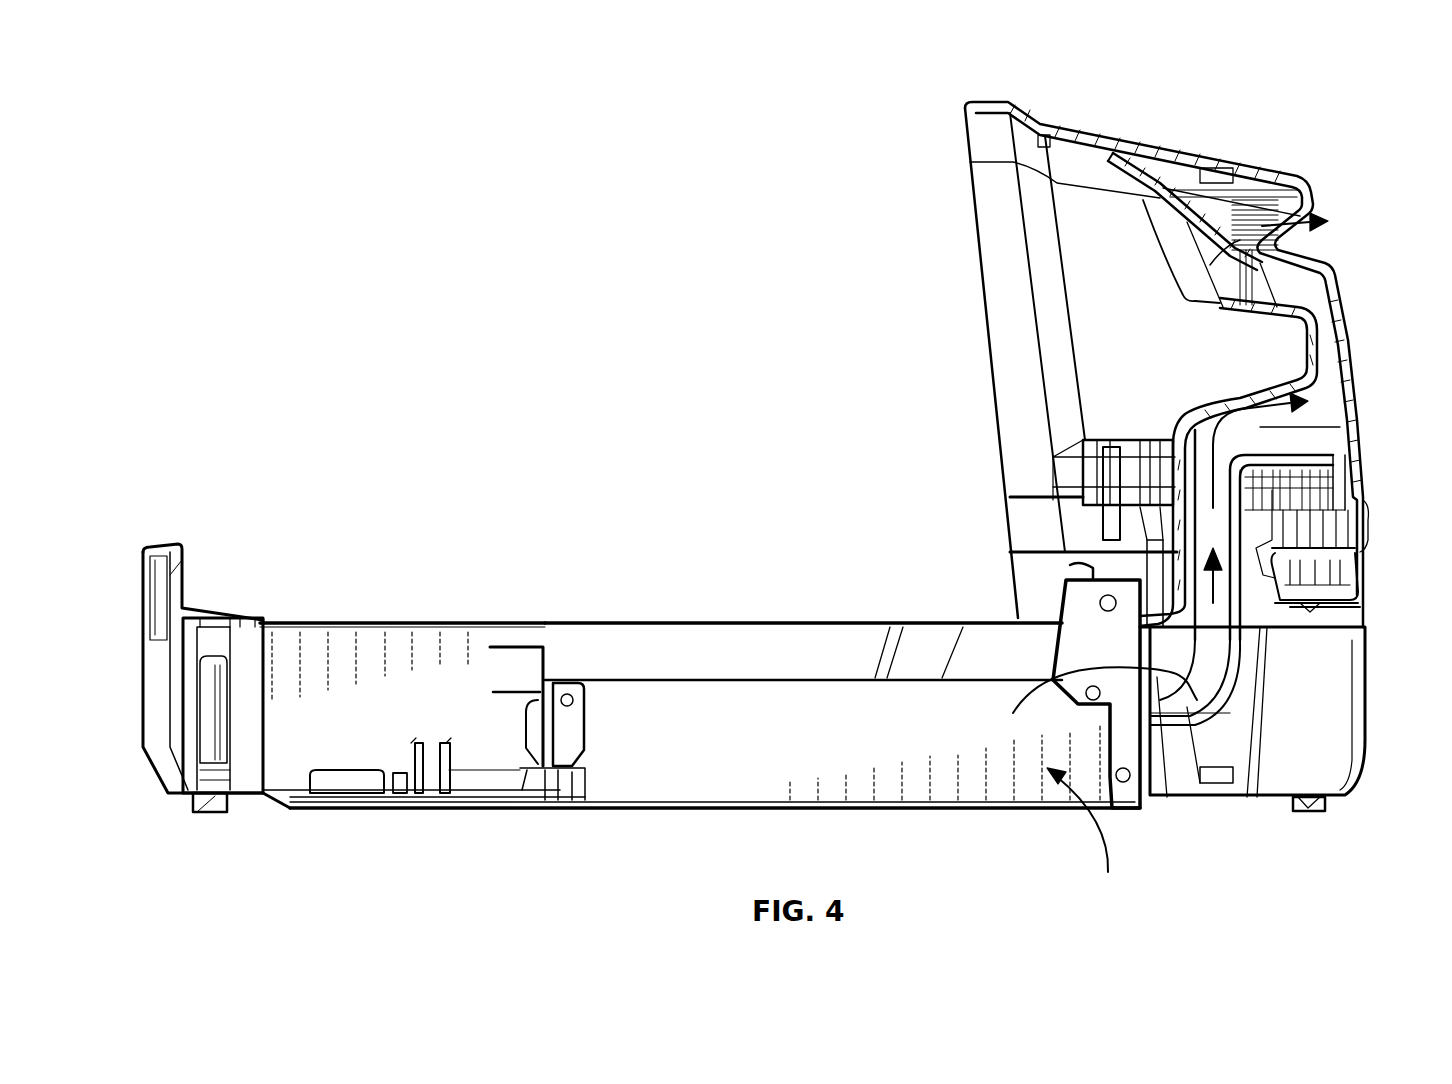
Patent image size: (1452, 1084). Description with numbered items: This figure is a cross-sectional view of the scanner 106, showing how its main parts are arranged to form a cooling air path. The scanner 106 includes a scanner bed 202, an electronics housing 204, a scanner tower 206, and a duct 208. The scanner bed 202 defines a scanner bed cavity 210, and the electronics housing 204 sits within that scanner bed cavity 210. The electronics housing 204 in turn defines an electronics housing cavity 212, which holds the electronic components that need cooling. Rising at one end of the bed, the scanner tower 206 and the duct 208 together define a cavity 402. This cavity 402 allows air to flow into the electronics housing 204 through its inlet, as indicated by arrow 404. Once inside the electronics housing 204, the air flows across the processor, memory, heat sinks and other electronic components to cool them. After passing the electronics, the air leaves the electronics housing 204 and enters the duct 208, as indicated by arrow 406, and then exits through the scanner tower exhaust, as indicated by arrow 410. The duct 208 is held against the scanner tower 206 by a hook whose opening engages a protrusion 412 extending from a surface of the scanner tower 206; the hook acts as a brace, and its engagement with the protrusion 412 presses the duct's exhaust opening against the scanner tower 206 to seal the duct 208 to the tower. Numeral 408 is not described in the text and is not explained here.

The scanner 106 is at (419, 210).
The scanner bed 202 is at (262, 619).
The electronics housing 204 is at (610, 682).
The scanner tower 206 is at (968, 106).
The duct 208 is at (1104, 540).
The scanner bed cavity 210 is at (401, 630).
The electronics housing cavity 212 is at (733, 697).
The cavity 402 is at (1175, 728).
The arrow 404 is at (1106, 836).
The arrow 406 is at (1020, 710).
The exhaust duct 408 is at (1340, 428).
The arrow 410 is at (1267, 175).
The protrusion 412 is at (1148, 172).